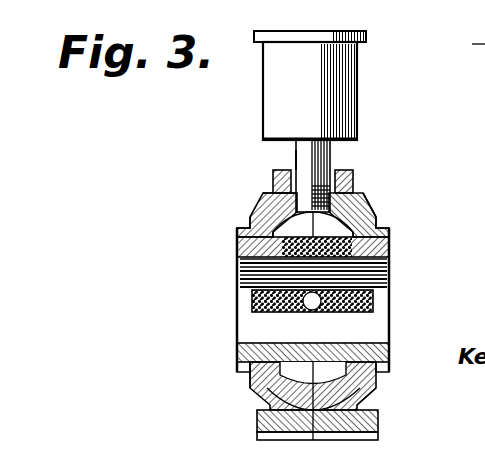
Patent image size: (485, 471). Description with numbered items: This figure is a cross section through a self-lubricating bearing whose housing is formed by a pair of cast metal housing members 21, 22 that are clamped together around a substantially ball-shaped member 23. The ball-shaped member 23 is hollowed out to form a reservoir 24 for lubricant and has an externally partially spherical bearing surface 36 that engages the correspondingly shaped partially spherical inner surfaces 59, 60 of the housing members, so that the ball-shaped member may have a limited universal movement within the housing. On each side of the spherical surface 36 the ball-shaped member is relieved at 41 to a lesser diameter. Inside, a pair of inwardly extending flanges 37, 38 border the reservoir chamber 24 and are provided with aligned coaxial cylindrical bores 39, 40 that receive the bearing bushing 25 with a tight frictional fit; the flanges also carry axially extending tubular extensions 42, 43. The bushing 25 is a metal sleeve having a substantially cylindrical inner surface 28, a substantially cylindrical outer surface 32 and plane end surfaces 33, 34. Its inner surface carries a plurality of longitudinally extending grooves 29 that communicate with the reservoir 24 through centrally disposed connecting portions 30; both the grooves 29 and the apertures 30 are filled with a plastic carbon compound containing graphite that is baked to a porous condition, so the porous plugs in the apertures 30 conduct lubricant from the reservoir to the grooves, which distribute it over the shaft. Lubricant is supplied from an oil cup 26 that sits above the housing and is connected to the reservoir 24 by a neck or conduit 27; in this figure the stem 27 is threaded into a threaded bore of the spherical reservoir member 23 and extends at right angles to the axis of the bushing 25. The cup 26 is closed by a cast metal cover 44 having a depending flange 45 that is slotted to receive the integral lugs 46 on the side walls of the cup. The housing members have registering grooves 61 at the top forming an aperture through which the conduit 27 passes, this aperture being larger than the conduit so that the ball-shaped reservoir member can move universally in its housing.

The housing member 21 is at (272, 182).
The housing member 22 is at (338, 168).
The ball-shaped member 23 is at (360, 194).
The reservoir 24 is at (378, 215).
The bearing bushing 25 is at (238, 251).
The oil cup 26 is at (262, 102).
The neck or conduit 27 is at (297, 152).
The inner surface 28 is at (240, 278).
The grooves 29 is at (252, 302).
The connecting portions 30 is at (262, 397).
The outer surface 32 is at (363, 397).
The end surface 33 is at (395, 249).
The end surface 34 is at (232, 361).
The bearing surface 36 is at (266, 193).
The flange 37 is at (250, 218).
The flange 38 is at (388, 224).
The cylindrical bore 39 is at (250, 376).
The cylindrical bore 40 is at (391, 349).
The relieved portion 41 is at (371, 203).
The tubular extension 42 is at (237, 237).
The tubular extension 43 is at (392, 236).
The cover 44 is at (345, 23).
The depending flange 45 is at (358, 50).
The lugs 46 is at (262, 50).
The partially spherical inner surface 59 is at (257, 428).
The partially spherical inner surface 60 is at (355, 191).
The registering grooves 61 is at (275, 172).